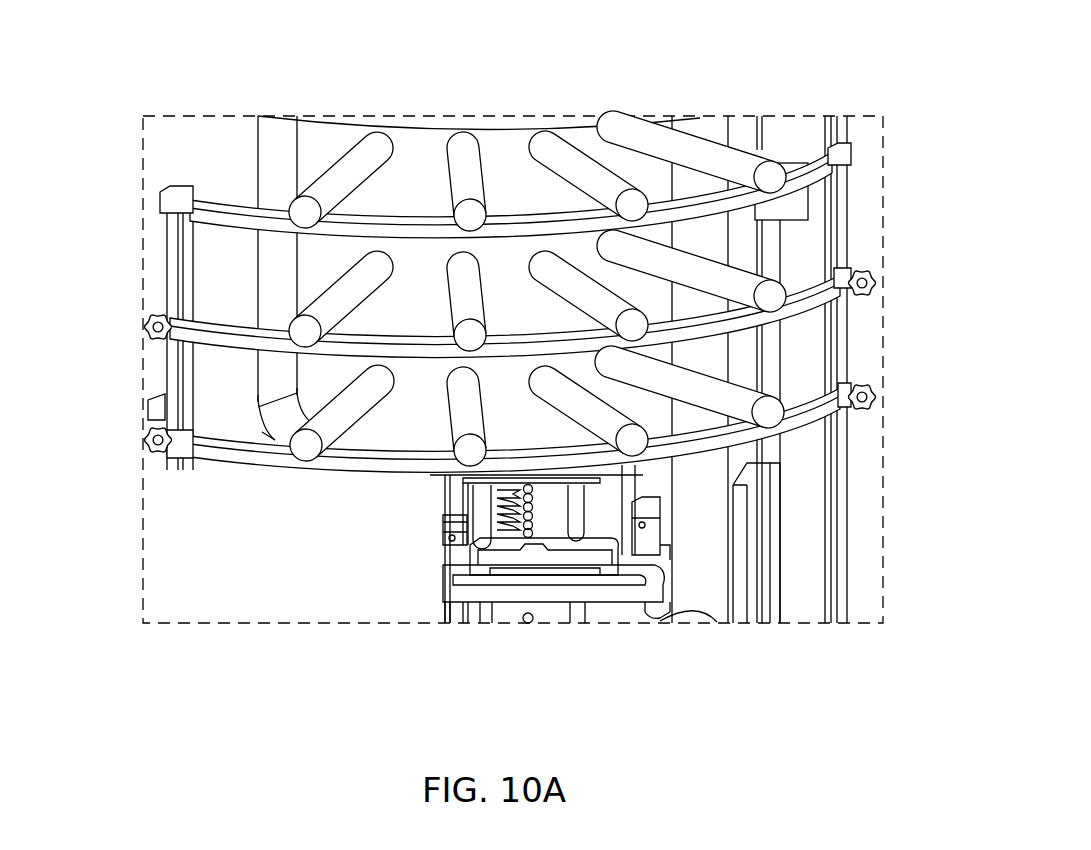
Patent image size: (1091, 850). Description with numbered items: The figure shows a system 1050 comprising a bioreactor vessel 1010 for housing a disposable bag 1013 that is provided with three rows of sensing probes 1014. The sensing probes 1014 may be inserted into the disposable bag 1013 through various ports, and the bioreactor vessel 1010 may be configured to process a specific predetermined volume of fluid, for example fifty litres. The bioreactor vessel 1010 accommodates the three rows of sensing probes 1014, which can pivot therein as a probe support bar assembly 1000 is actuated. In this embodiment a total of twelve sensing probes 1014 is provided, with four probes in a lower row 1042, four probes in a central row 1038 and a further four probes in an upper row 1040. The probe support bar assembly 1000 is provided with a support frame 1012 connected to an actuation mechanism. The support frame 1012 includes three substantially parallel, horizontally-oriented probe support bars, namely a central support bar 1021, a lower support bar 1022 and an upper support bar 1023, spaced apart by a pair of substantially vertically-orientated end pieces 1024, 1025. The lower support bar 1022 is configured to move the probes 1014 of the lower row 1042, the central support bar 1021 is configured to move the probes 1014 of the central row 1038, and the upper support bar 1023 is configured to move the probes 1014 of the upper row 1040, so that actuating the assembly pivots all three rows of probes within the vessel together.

The probe support bar assembly 1000 is at (490, 660).
The bioreactor vessel 1010 is at (222, 128).
The support frame 1012 is at (245, 512).
The disposable bag 1013 is at (418, 157).
The sensing probes 1014 is at (725, 100).
The central support bar 1021 is at (245, 338).
The lower support bar 1022 is at (362, 472).
The upper support bar 1023 is at (232, 212).
The end piece 1024 is at (838, 228).
The end piece 1025 is at (177, 373).
The central row 1038 is at (124, 281).
The upper row 1040 is at (124, 166).
The lower row 1042 is at (124, 368).
The system 1050 is at (872, 93).